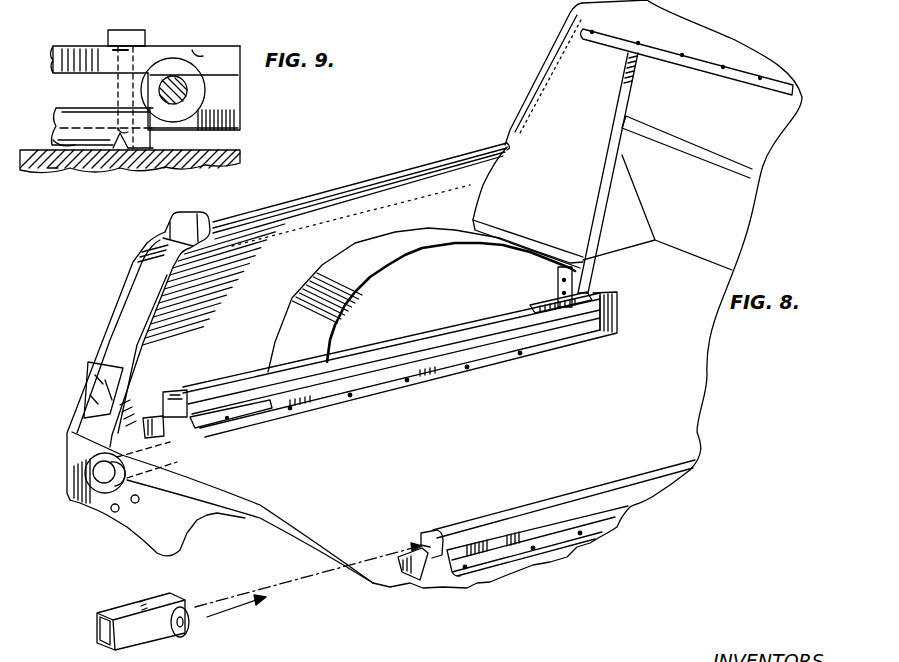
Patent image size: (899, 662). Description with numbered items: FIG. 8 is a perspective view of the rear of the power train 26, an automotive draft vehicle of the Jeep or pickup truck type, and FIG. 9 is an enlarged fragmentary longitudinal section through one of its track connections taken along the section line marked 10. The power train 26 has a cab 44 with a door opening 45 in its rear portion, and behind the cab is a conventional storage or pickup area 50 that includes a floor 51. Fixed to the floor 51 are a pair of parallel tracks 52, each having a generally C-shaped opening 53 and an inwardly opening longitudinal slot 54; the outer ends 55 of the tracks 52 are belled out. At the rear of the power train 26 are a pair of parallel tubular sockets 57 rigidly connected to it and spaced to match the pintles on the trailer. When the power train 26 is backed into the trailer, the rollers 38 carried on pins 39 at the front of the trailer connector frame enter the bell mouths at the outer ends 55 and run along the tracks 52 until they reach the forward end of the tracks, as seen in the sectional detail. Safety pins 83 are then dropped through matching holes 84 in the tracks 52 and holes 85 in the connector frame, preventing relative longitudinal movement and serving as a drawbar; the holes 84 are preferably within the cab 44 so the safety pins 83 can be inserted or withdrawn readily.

In FIG. 9, the section line 10- 10 is at (173, 186).
In FIG. 9, the power train 26 is at (242, 148).
In FIG. 8, the power train 26 is at (84, 359).
In FIG. 9, the rollers 38 is at (200, 78).
In FIG. 9, the pins 39 is at (180, 92).
In FIG. 8, the cab 44 is at (550, 62).
In FIG. 8, the door opening 45 is at (631, 98).
In FIG. 9, the storage or pickup area 50 is at (31, 144).
In FIG. 8, the storage or pickup area 50 is at (409, 196).
In FIG. 9, the floor 51 is at (55, 168).
In FIG. 8, the floor 51 is at (382, 477).
In FIG. 9, the tracks 52 is at (80, 45).
In FIG. 8, the tracks 52 is at (258, 370).
In FIG. 9, the C-shaped opening 53 is at (208, 43).
In FIG. 8, the C-shaped opening 53 is at (178, 391).
In FIG. 9, the longitudinal slot 54 is at (58, 80).
In FIG. 8, the longitudinal slot 54 is at (285, 394).
In FIG. 8, the outer ends 55 is at (170, 433).
In FIG. 8, the tubular sockets 57 is at (100, 490).
In FIG. 9, the safety pins 83 is at (148, 20).
In FIG. 9, the holes 84 is at (116, 56).
In FIG. 8, the holes 84 is at (583, 300).
In FIG. 9, the holes 85 is at (120, 132).